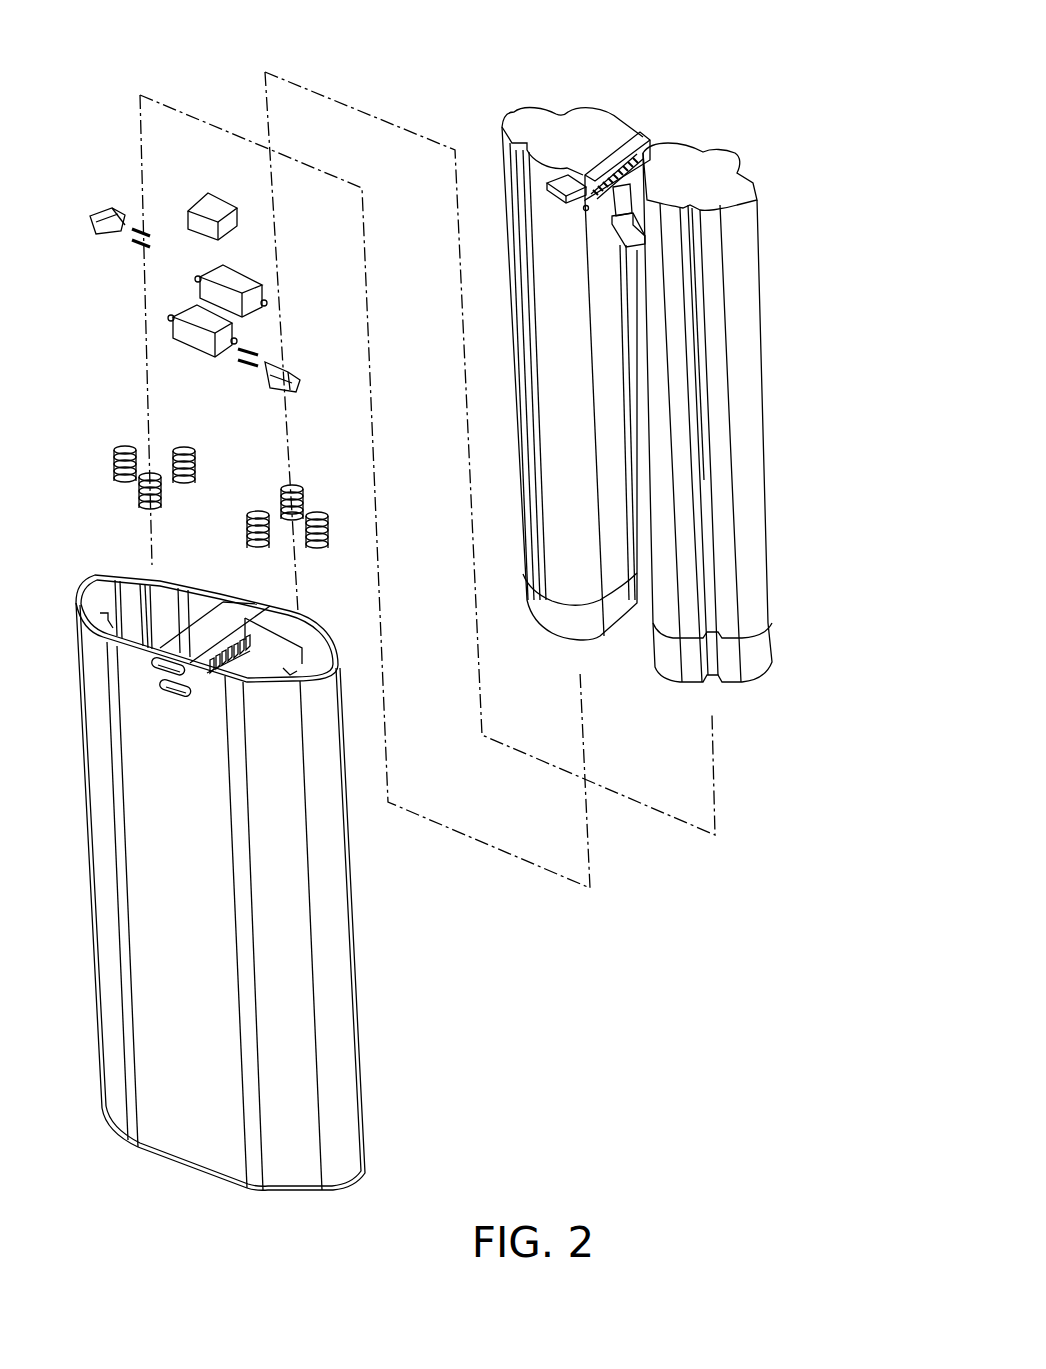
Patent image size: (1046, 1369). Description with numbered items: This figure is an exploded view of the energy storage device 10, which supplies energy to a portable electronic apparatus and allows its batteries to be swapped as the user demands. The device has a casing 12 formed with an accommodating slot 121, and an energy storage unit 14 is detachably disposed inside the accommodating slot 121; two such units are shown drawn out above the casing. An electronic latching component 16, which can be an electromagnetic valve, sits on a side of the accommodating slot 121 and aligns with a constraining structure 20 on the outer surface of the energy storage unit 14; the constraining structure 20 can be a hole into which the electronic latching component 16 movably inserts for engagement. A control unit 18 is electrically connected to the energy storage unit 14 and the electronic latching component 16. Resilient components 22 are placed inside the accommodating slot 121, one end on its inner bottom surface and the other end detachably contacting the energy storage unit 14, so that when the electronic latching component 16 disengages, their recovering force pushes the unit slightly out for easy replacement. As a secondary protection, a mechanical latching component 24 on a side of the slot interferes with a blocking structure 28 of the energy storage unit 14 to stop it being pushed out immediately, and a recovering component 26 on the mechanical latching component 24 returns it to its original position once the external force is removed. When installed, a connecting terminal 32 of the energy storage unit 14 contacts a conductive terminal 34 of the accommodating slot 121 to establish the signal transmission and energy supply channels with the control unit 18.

The energy storage device 10 is at (790, 64).
The casing 12 is at (343, 882).
The accommodating slot 121 is at (126, 598).
The energy storage unit 14 is at (512, 180).
The electronic latching component 16 is at (242, 275).
The control unit 18 is at (217, 205).
The constraining structure 20 is at (574, 210).
The resilient component 22 is at (123, 483).
The mechanical latching component 24 is at (100, 233).
The recovering component 26 is at (140, 248).
The blocking structure 28 is at (577, 180).
The connecting terminal 32 is at (632, 130).
The conductive terminal 34 is at (233, 640).